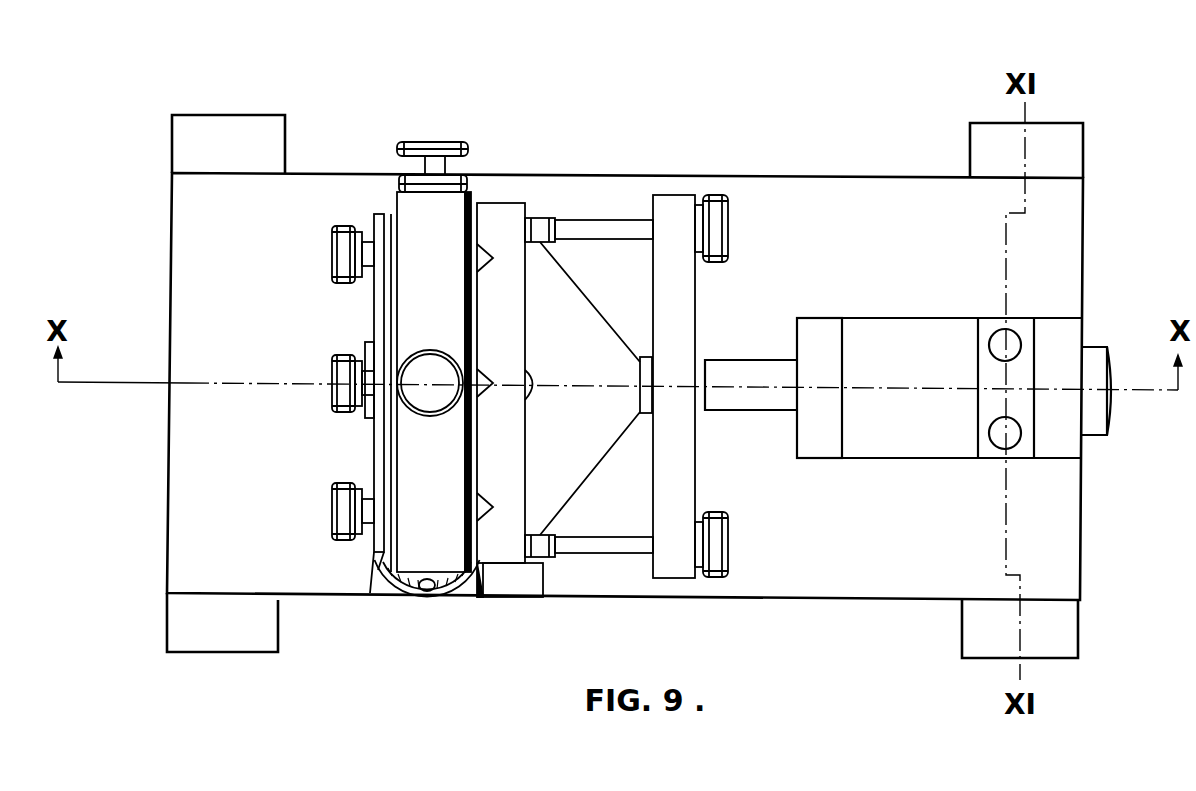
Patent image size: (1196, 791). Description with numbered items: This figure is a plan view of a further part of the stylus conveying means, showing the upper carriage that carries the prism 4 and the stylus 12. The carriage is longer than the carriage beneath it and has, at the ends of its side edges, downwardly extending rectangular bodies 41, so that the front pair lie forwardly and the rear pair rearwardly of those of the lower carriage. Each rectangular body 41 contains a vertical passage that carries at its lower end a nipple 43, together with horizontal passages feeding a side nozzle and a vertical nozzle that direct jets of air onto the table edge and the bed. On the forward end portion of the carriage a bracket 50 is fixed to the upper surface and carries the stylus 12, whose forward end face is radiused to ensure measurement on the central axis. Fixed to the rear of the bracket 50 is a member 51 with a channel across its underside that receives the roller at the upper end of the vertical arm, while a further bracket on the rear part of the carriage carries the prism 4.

The downwardly extending rectangular bodies 41 is at (253, 123).
The nipple 43 is at (458, 202).
The prism 4 is at (592, 328).
The bracket 50 is at (915, 318).
The member 51 is at (818, 330).
The stylus 12 is at (1107, 408).